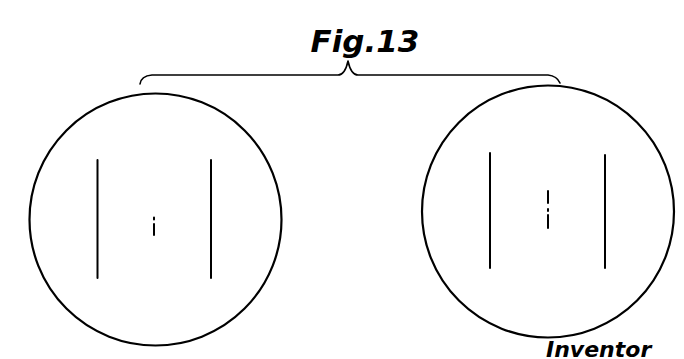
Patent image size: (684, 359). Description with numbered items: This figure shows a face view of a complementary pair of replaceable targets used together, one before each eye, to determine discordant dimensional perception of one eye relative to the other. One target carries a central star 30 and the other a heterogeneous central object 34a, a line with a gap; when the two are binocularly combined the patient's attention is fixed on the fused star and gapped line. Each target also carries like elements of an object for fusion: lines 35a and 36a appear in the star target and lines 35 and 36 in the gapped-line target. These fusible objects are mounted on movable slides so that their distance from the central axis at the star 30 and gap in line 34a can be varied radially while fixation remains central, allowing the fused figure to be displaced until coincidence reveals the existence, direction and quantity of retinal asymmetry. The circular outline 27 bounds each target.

The disk 27 is at (255, 296).
The central star 30 is at (154, 238).
The heterogeneous central object 34a is at (548, 228).
The line 35 is at (496, 147).
The fusible object 35a is at (104, 153).
The line 36 is at (600, 157).
The slot 36a is at (204, 171).